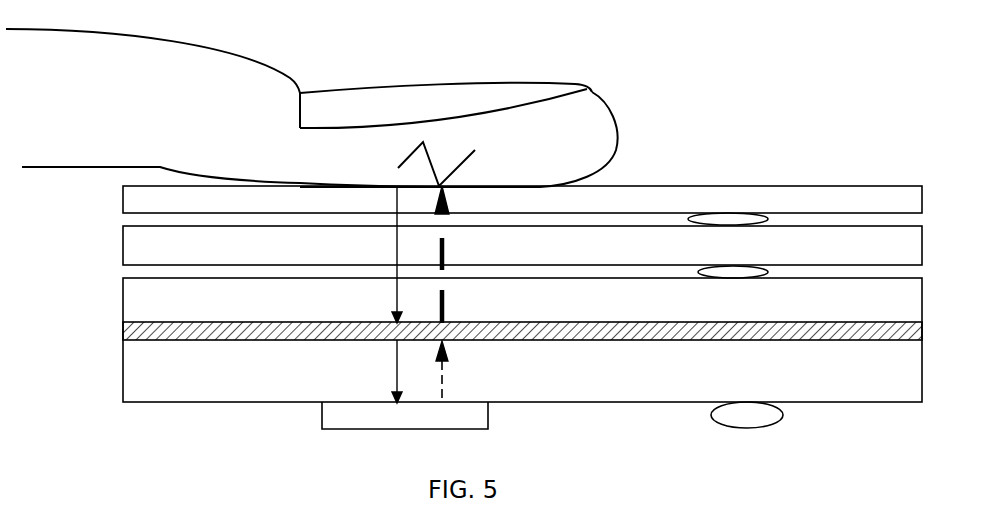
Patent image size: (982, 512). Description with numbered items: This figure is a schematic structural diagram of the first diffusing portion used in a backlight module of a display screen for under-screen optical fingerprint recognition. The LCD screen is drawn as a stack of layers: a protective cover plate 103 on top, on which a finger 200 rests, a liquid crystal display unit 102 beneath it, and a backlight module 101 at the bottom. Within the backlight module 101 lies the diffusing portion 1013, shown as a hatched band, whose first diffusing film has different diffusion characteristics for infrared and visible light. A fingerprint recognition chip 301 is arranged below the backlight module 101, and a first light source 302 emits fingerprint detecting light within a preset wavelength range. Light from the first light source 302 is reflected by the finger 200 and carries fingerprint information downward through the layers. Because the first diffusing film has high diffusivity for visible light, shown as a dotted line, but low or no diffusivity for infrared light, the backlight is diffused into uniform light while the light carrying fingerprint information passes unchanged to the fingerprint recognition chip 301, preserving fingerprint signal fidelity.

The finger 200 is at (312, 108).
The protective cover plate 103 is at (522, 199).
The liquid crystal display unit 102 is at (522, 245).
The backlight module 101 is at (522, 340).
The diffusing portion 1013 is at (145, 327).
The fingerprint recognition chip 301 is at (405, 416).
The first light source 302 is at (747, 415).